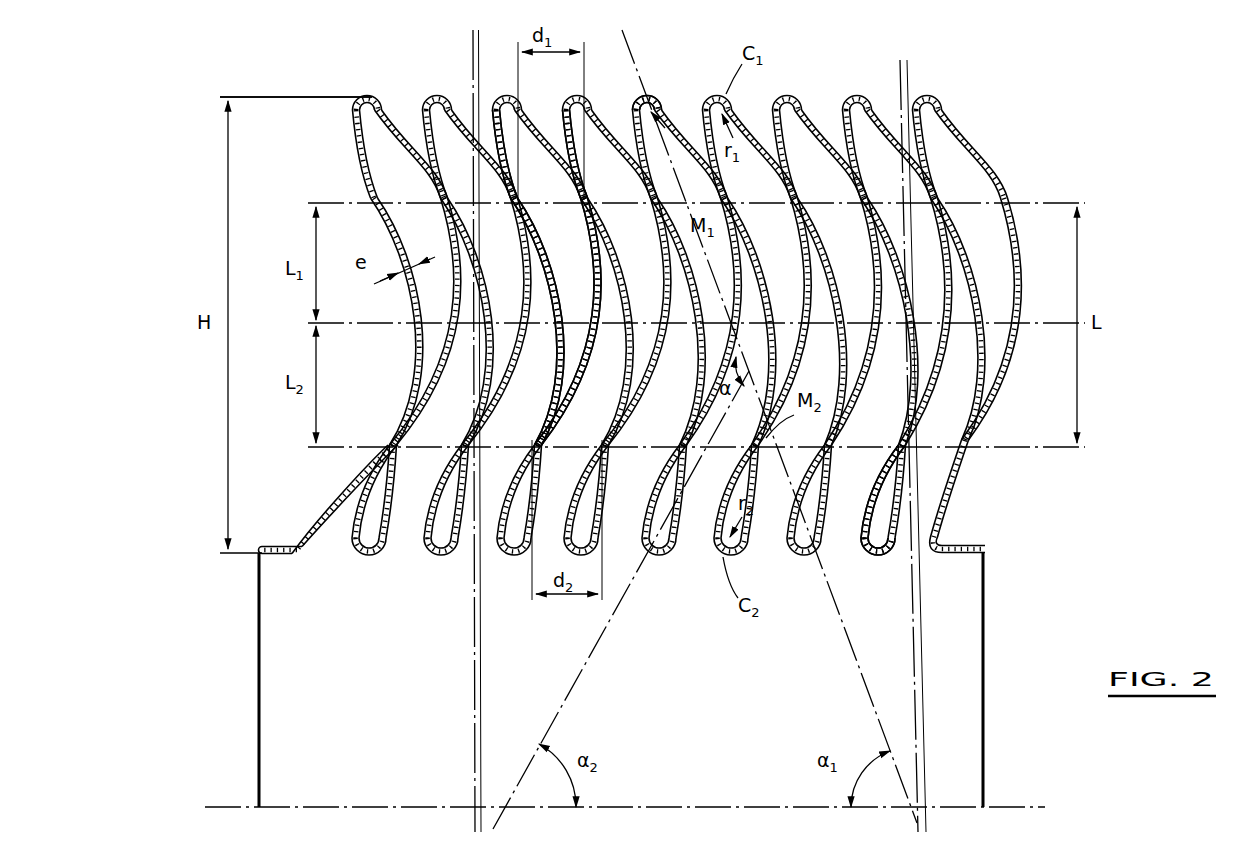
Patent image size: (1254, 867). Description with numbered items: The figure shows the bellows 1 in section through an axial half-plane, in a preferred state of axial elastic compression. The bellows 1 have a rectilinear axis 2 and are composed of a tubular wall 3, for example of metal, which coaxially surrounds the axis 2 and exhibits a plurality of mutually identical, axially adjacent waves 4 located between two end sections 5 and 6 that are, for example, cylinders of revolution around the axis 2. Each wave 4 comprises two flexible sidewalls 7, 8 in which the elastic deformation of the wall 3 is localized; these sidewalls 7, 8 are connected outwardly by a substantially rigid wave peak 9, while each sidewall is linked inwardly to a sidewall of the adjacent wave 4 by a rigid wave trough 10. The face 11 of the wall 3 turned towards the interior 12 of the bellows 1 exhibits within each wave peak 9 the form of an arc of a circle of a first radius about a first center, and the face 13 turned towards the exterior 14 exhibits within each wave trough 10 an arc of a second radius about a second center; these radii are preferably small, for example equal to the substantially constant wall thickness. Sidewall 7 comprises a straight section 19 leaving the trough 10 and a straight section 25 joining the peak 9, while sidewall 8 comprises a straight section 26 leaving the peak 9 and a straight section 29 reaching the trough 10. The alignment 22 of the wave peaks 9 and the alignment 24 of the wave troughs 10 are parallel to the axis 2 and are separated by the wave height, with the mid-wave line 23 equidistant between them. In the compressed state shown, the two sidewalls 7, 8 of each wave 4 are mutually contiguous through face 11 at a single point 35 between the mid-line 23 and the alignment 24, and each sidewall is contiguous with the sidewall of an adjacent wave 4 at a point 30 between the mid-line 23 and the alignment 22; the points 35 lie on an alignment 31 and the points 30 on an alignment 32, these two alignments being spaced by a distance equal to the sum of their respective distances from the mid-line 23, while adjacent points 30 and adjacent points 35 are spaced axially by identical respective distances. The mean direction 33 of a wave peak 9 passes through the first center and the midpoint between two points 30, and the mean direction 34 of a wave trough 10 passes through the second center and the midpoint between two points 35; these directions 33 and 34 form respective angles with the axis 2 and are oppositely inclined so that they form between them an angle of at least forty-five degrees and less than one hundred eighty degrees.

The bellows 1 is at (238, 701).
The axis 2 is at (398, 810).
The tubular wall 3 is at (340, 522).
The wave 4 is at (476, 118).
The end section 5 is at (278, 545).
The end section 6 is at (985, 548).
The sidewall 7 is at (614, 242).
The sidewall 8 is at (517, 255).
The wave peak 9 is at (652, 98).
The wave trough 10 is at (583, 548).
The face of the wall turned towards the interior 11 is at (838, 550).
The interior of the bellows 12 is at (749, 701).
The face of the wall turned towards the exterior 13 is at (835, 520).
The exterior of the bellows 14 is at (847, 41).
The straight section 19 is at (506, 484).
The alignment of the wave peaks 22 is at (292, 93).
The mid-wave line 23 is at (1013, 345).
The alignment of the wave troughs 24 is at (243, 560).
The straight section 25 is at (520, 186).
The straight section 26 is at (510, 200).
The straight section 29 is at (527, 476).
The contact point 30 is at (518, 196).
The alignment of the points 35 31 is at (1040, 450).
The alignment of the points 30 32 is at (1032, 198).
The mean direction of a wave peak 33 is at (652, 48).
The mean direction of a wave trough 34 is at (630, 662).
The contact point 35 is at (531, 438).